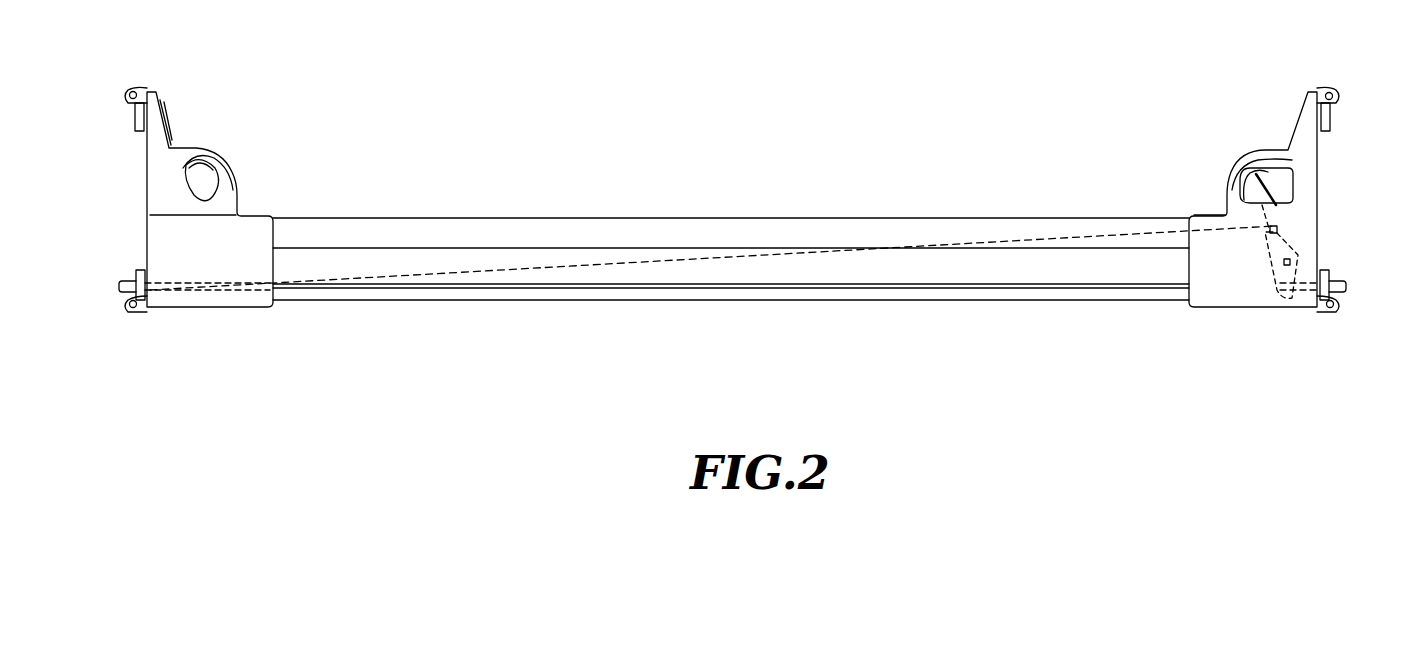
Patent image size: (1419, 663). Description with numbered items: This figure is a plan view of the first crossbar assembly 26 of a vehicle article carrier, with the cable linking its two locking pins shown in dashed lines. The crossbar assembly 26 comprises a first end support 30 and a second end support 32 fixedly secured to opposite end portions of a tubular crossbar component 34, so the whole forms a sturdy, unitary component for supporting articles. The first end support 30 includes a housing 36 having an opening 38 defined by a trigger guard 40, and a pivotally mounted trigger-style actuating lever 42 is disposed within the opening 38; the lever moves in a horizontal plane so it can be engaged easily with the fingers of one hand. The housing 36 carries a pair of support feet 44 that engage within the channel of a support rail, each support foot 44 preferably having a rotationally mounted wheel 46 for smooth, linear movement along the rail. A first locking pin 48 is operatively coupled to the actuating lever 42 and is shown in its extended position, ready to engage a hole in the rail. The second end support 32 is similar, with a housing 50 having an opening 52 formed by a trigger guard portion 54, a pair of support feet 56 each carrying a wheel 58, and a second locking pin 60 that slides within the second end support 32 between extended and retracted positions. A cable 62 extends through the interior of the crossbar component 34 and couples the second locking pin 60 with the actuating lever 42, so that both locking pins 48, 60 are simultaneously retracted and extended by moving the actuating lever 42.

The first crossbar assembly 26 is at (650, 95).
The first end support 30 is at (1232, 309).
The second end support 32 is at (183, 309).
The tubular crossbar component 34 is at (668, 236).
The housing 36 is at (1218, 214).
The opening 38 is at (1281, 180).
The trigger guard 40 is at (1236, 178).
The actuating lever 42 is at (1257, 175).
The support foot 44 is at (1330, 120).
The wheel 46 is at (1336, 96).
The first locking pin 48 is at (1345, 287).
The housing 50 is at (198, 212).
The opening 52 is at (203, 178).
The trigger guard portion 54 is at (226, 170).
The support foot 56 is at (135, 115).
The wheel 58 is at (128, 94).
The second locking pin 60 is at (120, 287).
The cable 62 is at (376, 278).